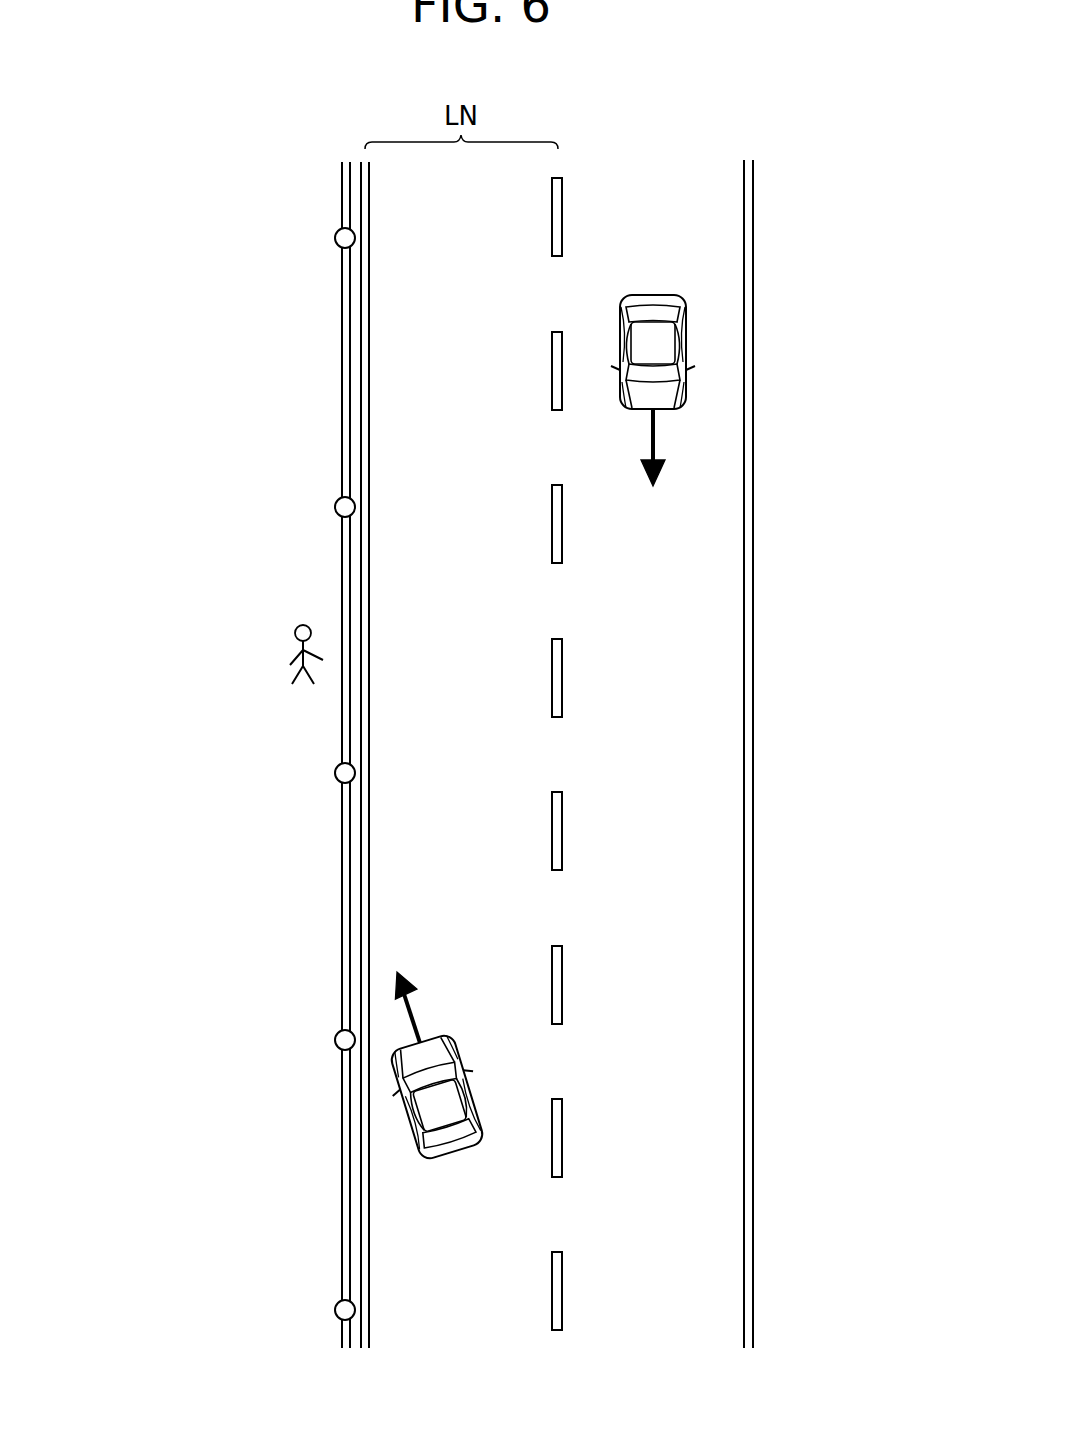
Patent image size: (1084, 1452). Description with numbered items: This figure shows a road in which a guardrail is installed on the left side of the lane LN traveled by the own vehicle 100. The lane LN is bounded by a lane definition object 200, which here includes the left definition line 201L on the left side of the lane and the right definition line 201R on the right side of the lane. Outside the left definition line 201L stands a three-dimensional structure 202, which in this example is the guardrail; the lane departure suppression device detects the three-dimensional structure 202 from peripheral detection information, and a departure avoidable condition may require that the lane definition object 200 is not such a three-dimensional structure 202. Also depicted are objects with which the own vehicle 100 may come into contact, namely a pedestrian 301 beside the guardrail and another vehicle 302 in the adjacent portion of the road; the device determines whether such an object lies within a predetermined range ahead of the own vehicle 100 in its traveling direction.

The own vehicle 100 is at (462, 1150).
The lane definition object 200 is at (748, 754).
The left definition line 201L is at (368, 218).
The right definition line 201R is at (562, 219).
The three-dimensional structure 202 is at (345, 297).
The pedestrian 301 is at (268, 665).
The another vehicle 302 is at (688, 352).